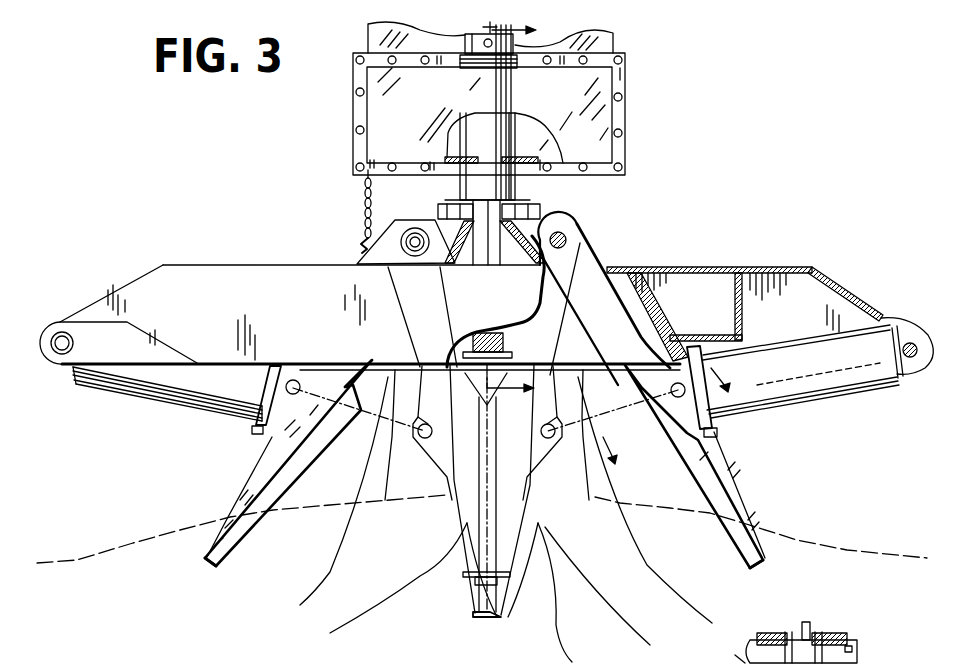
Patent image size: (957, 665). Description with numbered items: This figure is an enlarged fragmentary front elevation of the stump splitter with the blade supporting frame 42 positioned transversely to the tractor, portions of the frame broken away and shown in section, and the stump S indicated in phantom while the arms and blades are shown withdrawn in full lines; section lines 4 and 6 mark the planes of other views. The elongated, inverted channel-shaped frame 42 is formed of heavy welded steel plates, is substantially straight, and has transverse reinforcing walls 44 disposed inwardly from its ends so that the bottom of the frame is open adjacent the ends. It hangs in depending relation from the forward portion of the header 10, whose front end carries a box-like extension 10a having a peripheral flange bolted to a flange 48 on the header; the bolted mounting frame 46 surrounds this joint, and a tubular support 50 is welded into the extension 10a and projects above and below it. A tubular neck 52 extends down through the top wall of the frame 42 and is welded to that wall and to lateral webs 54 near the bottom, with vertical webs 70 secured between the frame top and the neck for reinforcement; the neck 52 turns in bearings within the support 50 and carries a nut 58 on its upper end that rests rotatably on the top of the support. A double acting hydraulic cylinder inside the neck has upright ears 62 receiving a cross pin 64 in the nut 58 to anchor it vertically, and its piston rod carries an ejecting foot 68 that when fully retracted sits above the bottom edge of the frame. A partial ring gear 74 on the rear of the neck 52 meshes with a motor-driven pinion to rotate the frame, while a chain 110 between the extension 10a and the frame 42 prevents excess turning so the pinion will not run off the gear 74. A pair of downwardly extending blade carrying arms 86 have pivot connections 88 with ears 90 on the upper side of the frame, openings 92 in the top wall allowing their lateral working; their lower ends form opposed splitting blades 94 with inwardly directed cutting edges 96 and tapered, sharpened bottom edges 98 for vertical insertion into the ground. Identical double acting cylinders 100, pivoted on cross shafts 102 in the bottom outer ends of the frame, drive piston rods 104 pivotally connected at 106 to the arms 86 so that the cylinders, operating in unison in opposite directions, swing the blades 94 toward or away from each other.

The header 10 is at (613, 32).
The header extension 10a is at (602, 117).
The section line 4- 4 is at (514, 222).
The section line 6- 6 is at (671, 415).
The blade supporting frame 42 is at (278, 277).
The transverse reinforcing walls 44 is at (733, 293).
The mounting frame 46 is at (357, 115).
The flange 48 is at (730, 663).
The tubular support 50 is at (507, 180).
The tubular neck 52 is at (483, 213).
The lateral webs 54 is at (478, 331).
The nut 58 is at (470, 50).
The upright ears 62 is at (816, 632).
The cross pin 64 is at (860, 650).
The ejecting foot 68 is at (510, 355).
The vertical webs 70 is at (465, 258).
The partial ring gear 74 is at (438, 210).
The blade carrying arms 86 is at (576, 283).
The pivot connection 88 is at (413, 228).
The ears 90 is at (400, 236).
The openings 92 is at (625, 267).
The splitting blades 94 is at (447, 493).
The cutting edges 96 is at (249, 527).
The sharpened bottom edge 98 is at (215, 568).
The double acting cylinders 100 is at (193, 388).
The cross shafts 102 is at (62, 337).
The piston rods 104 is at (401, 440).
The pivotal connection 106 is at (266, 415).
The chain 110 is at (364, 198).
The stump S is at (388, 445).